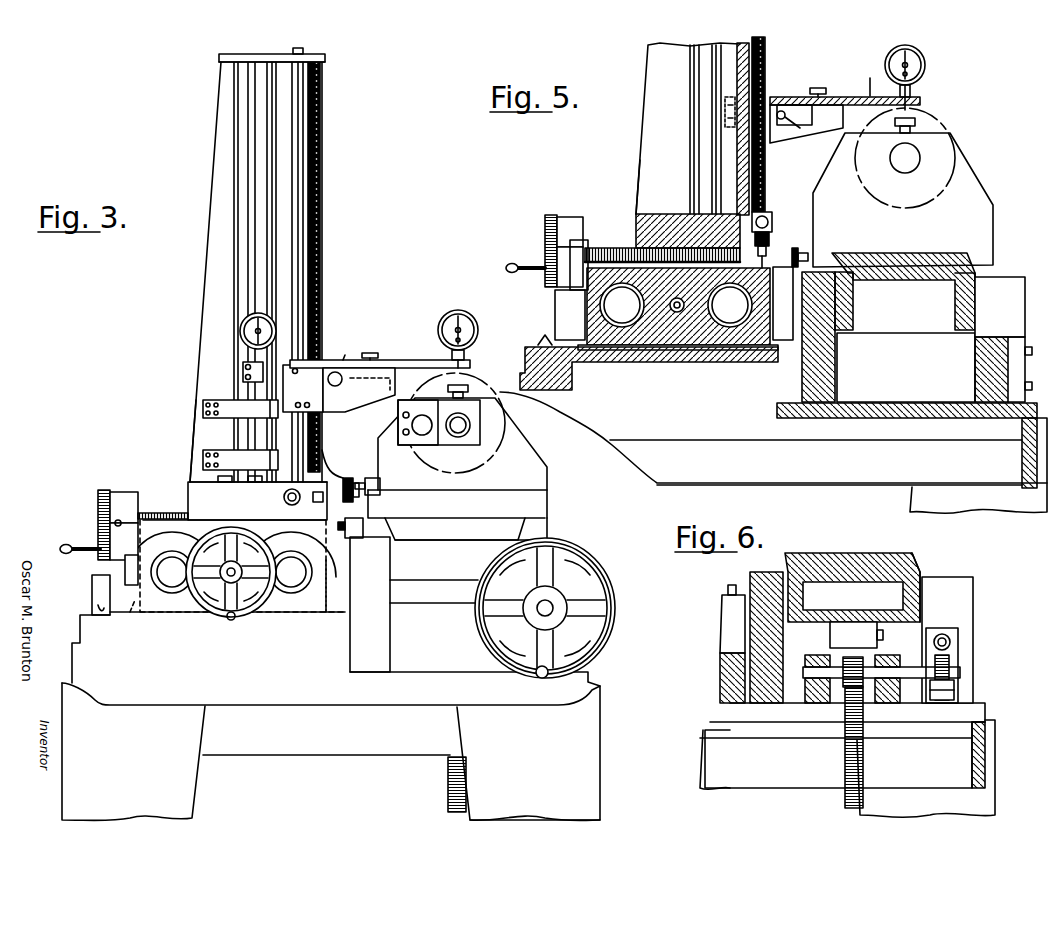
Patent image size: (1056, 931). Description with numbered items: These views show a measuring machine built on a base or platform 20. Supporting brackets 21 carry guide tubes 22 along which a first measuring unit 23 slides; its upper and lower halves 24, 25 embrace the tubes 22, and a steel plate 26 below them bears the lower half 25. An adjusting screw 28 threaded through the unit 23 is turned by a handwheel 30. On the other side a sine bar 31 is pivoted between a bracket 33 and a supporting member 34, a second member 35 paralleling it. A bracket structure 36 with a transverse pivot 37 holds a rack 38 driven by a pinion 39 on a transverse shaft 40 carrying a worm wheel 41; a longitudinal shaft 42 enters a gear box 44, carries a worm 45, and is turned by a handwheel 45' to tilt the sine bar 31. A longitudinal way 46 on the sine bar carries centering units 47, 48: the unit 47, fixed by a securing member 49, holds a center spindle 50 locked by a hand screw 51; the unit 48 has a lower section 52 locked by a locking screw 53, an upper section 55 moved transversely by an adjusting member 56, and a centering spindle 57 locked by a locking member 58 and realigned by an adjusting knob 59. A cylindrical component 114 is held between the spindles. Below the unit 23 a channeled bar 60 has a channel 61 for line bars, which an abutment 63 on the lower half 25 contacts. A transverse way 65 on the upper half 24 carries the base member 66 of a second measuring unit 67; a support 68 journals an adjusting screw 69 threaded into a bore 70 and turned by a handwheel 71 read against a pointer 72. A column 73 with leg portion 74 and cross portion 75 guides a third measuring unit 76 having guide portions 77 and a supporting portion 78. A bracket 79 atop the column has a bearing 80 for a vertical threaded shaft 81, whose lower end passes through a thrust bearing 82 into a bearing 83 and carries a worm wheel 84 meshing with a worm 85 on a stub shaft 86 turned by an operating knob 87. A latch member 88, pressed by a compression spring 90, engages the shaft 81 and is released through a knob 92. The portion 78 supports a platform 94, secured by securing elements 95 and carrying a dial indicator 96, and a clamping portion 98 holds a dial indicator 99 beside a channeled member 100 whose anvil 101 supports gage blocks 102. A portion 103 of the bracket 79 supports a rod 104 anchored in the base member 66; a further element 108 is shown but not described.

In FIG. 3, the base 20 is at (70, 688).
In FIG. 5, the base 20 is at (680, 464).
In FIG. 6, the base 20 is at (985, 752).
In FIG. 3, the supporting brackets 21 is at (352, 596).
In FIG. 6, the supporting brackets 21 is at (730, 705).
In FIG. 3, the tubes 22 is at (182, 593).
In FIG. 5, the tubes 22 is at (622, 327).
In FIG. 3, the first measuring unit 23 is at (153, 520).
In FIG. 5, the first measuring unit 23 is at (695, 340).
In FIG. 3, the upper half 24 is at (200, 540).
In FIG. 5, the upper half 24 is at (587, 300).
In FIG. 3, the lower half 25 is at (130, 612).
In FIG. 5, the lower half 25 is at (603, 337).
In FIG. 3, the steel plate 26 is at (316, 612).
In FIG. 5, the steel plate 26 is at (755, 345).
In FIG. 5, the adjusting screw 28 is at (672, 312).
In FIG. 3, the handwheel 30 is at (228, 620).
In FIG. 3, the sine bar 31 is at (483, 520).
In FIG. 5, the sine bar 31 is at (924, 253).
In FIG. 6, the sine bar 31 is at (896, 553).
In FIG. 5, the bracket 33 is at (1010, 277).
In FIG. 6, the bracket 33 is at (958, 577).
In FIG. 3, the supporting member 34 is at (390, 648).
In FIG. 5, the supporting member 34 is at (840, 367).
In FIG. 6, the supporting member 34 is at (750, 578).
In FIG. 3, the second member 35 is at (555, 657).
In FIG. 5, the second member 35 is at (975, 367).
In FIG. 6, the bracket structure 36 is at (882, 615).
In FIG. 6, the transverse pivot 37 is at (823, 630).
In FIG. 3, the rack 38 is at (448, 781).
In FIG. 6, the rack 38 is at (863, 752).
In FIG. 6, the pinion 39 is at (843, 660).
In FIG. 6, the transverse shaft 40 is at (962, 674).
In FIG. 6, the worm wheel 41 is at (946, 690).
In FIG. 3, the adjusting shaft 42 is at (553, 608).
In FIG. 6, the adjusting shaft 42 is at (952, 642).
In FIG. 6, the gear box 44 is at (950, 662).
In FIG. 6, the worm 45 is at (970, 652).
In FIG. 3, the handwheel 45' is at (545, 597).
In FIG. 3, the longitudinal way 46 is at (398, 530).
In FIG. 5, the longitudinal way 46 is at (962, 255).
In FIG. 6, the longitudinal way 46 is at (918, 562).
In FIG. 5, the centering unit 47 is at (965, 170).
In FIG. 3, the centering unit 48 is at (540, 470).
In FIG. 5, the securing member 49 is at (808, 255).
In FIG. 5, the center spindle 50 is at (912, 170).
In FIG. 5, the hand screw 51 is at (915, 118).
In FIG. 3, the lower section 52 is at (547, 505).
In FIG. 3, the locking screw 53 is at (350, 538).
In FIG. 3, the upper section 55 is at (547, 480).
In FIG. 3, the adjusting member 56 is at (372, 498).
In FIG. 3, the centering spindle 57 is at (458, 437).
In FIG. 3, the locking member 58 is at (468, 388).
In FIG. 3, the adjusting knob 59 is at (420, 437).
In FIG. 3, the channeled bar 60 is at (80, 627).
In FIG. 5, the channeled bar 60 is at (565, 390).
In FIG. 3, the channel 61 is at (97, 606).
In FIG. 5, the channel 61 is at (540, 345).
In FIG. 3, the abutment 63 is at (92, 583).
In FIG. 5, the abutment 63 is at (555, 300).
In FIG. 5, the transverse way 65 is at (758, 262).
In FIG. 3, the base member 66 is at (192, 488).
In FIG. 3, the second measuring unit 67 is at (186, 408).
In FIG. 5, the second measuring unit 67 is at (636, 137).
In FIG. 3, the support 68 is at (134, 562).
In FIG. 5, the support 68 is at (580, 240).
In FIG. 3, the adjusting screw 69 is at (172, 513).
In FIG. 5, the adjusting screw 69 is at (600, 248).
In FIG. 5, the threaded bore 70 is at (700, 235).
In FIG. 3, the handwheel 71 is at (98, 522).
In FIG. 5, the handwheel 71 is at (545, 239).
In FIG. 3, the pointer 72 is at (118, 490).
In FIG. 5, the pointer 72 is at (555, 215).
In FIG. 3, the columnar structure 73 is at (197, 381).
In FIG. 5, the columnar structure 73 is at (640, 166).
In FIG. 3, the leg portion 74 is at (213, 176).
In FIG. 5, the leg portion 74 is at (648, 49).
In FIG. 3, the cross portion 75 is at (318, 123).
In FIG. 5, the cross portion 75 is at (768, 49).
In FIG. 3, the third measuring unit 76 is at (347, 343).
In FIG. 5, the third measuring unit 76 is at (871, 72).
In FIG. 3, the guide portions 77 is at (303, 388).
In FIG. 5, the guide portions 77 is at (722, 118).
In FIG. 3, the supporting portion 78 is at (392, 386).
In FIG. 5, the supporting portion 78 is at (840, 105).
In FIG. 3, the bracket 79 is at (228, 54).
In FIG. 3, the bearing 80 is at (325, 59).
In FIG. 3, the vertical threaded shaft 81 is at (322, 88).
In FIG. 5, the vertical threaded shaft 81 is at (766, 62).
In FIG. 3, the thrust bearing 82 is at (324, 452).
In FIG. 3, the bearing 83 is at (345, 478).
In FIG. 3, the worm wheel 84 is at (326, 500).
In FIG. 5, the worm wheel 84 is at (770, 246).
In FIG. 5, the worm 85 is at (768, 212).
In FIG. 5, the stub shaft 86 is at (770, 235).
In FIG. 3, the operating knob 87 is at (284, 496).
In FIG. 5, the latch member 88 is at (793, 105).
In FIG. 5, the compression spring 90 is at (790, 128).
In FIG. 3, the operating knob 92 is at (340, 384).
In FIG. 3, the platform 94 is at (416, 358).
In FIG. 5, the platform 94 is at (912, 98).
In FIG. 3, the securing elements 95 is at (377, 345).
In FIG. 5, the securing elements 95 is at (819, 81).
In FIG. 3, the dial indicator 96 is at (450, 314).
In FIG. 5, the dial indicator 96 is at (925, 58).
In FIG. 3, the clamping portion 98 is at (243, 369).
In FIG. 3, the dial indicator 99 is at (240, 331).
In FIG. 3, the channeled member 100 is at (248, 288).
In FIG. 5, the channeled member 100 is at (695, 93).
In FIG. 3, the anvil 101 is at (250, 482).
In FIG. 5, the anvil 101 is at (700, 74).
In FIG. 3, the gage blocks 102 is at (248, 448).
In FIG. 3, the longitudinally directed portion 103 is at (222, 60).
In FIG. 3, the rod 104 is at (234, 257).
In FIG. 3, the clamp 108 is at (203, 455).
In FIG. 3, the cylindrical component 114 is at (490, 388).
In FIG. 5, the cylindrical component 114 is at (940, 122).